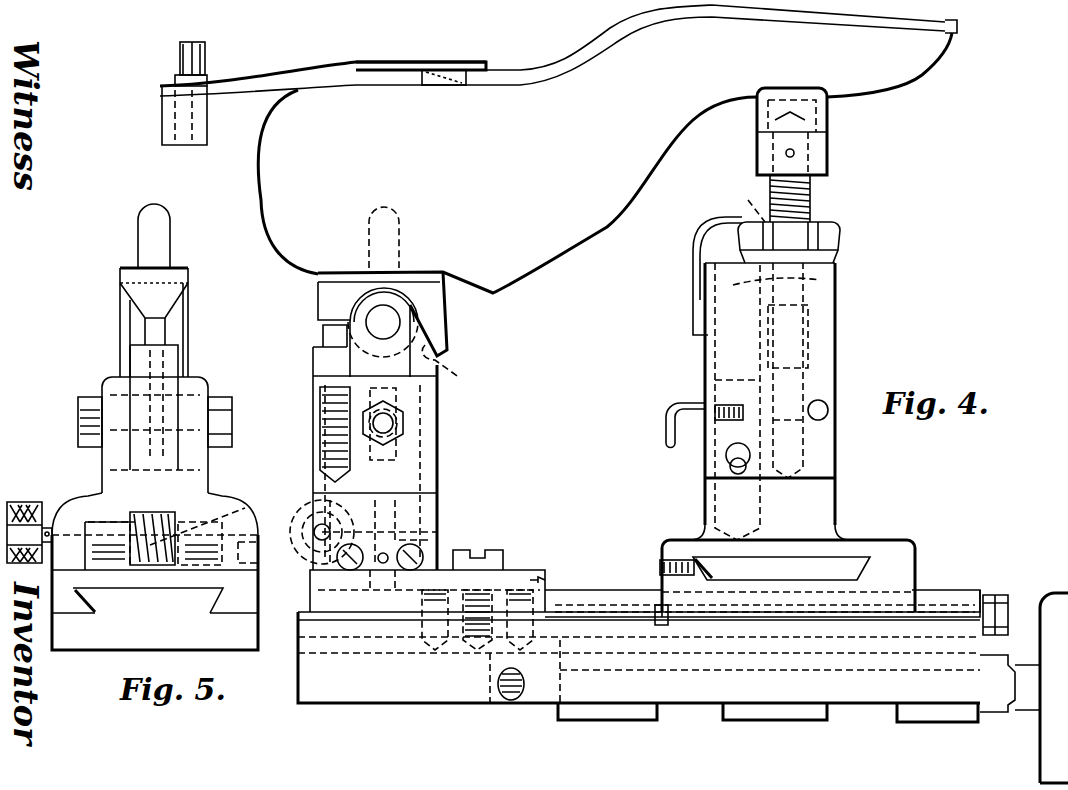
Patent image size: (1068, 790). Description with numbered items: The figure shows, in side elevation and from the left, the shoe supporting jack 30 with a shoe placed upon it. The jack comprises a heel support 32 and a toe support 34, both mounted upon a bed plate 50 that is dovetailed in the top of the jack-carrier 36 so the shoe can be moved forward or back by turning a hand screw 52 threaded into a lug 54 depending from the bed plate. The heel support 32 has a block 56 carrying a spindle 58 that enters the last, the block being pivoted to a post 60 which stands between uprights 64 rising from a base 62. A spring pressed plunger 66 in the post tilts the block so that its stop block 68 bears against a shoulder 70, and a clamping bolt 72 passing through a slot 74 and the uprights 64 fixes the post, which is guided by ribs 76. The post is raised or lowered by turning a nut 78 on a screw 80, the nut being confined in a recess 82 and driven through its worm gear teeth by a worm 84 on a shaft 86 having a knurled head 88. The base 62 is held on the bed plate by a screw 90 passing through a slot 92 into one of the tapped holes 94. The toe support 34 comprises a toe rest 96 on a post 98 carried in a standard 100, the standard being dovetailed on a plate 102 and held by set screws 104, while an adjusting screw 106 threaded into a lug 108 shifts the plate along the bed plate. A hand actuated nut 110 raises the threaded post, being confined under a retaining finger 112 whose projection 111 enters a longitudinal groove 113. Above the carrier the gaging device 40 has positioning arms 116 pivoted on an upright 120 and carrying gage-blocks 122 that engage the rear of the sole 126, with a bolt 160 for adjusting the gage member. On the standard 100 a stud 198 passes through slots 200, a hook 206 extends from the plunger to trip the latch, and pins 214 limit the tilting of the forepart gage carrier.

In FIG. 4, the shoe supporting jack 30 is at (652, 512).
In FIG. 4, the heel support 32 is at (320, 462).
In FIG. 5, the heel support 32 is at (97, 297).
In FIG. 4, the toe support 34 is at (847, 354).
In FIG. 4, the jack-carrier 36 is at (376, 690).
In FIG. 4, the gaging device 40 is at (320, 70).
In FIG. 4, the bed plate 50 is at (606, 600).
In FIG. 4, the hand screw 52 is at (1040, 745).
In FIG. 4, the lug 54 is at (588, 712).
In FIG. 4, the block 56 is at (332, 298).
In FIG. 4, the spindle 58 is at (399, 220).
In FIG. 5, the spindle 58 is at (148, 218).
In FIG. 4, the post 60 is at (440, 388).
In FIG. 4, the base 62 is at (440, 500).
In FIG. 4, the uprights 64 is at (470, 405).
In FIG. 5, the uprights 64 is at (112, 398).
In FIG. 4, the spring pressed plunger 66 is at (328, 337).
In FIG. 5, the spring pressed plunger 66 is at (150, 330).
In FIG. 4, the stop block 68 is at (440, 330).
In FIG. 4, the shoulder 70 is at (460, 365).
In FIG. 4, the clamping bolt 72 is at (395, 423).
In FIG. 5, the clamping bolt 72 is at (233, 420).
In FIG. 4, the slot 74 is at (400, 455).
In FIG. 5, the slot 74 is at (150, 395).
In FIG. 4, the ribs 76 is at (335, 434).
In FIG. 5, the ribs 76 is at (124, 360).
In FIG. 4, the nut 78 is at (428, 530).
In FIG. 5, the nut 78 is at (180, 535).
In FIG. 4, the screw 80 is at (330, 500).
In FIG. 5, the screw 80 is at (200, 498).
In FIG. 4, the recess 82 is at (305, 522).
In FIG. 4, the worm 84 is at (310, 548).
In FIG. 5, the worm 84 is at (152, 565).
In FIG. 4, the shaft 86 is at (312, 538).
In FIG. 5, the shaft 86 is at (68, 505).
In FIG. 4, the knurled head 88 is at (310, 572).
In FIG. 5, the knurled head 88 is at (25, 505).
In FIG. 4, the screw 90 is at (488, 560).
In FIG. 4, the slot 92 is at (545, 590).
In FIG. 4, the tapped holes 94 is at (520, 650).
In FIG. 4, the toe rest 96 is at (830, 122).
In FIG. 4, the post 98 is at (812, 205).
In FIG. 4, the standard 100 is at (826, 452).
In FIG. 4, the plate 102 is at (788, 568).
In FIG. 4, the set screws 104 is at (660, 568).
In FIG. 4, the adjusting screw 106 is at (998, 600).
In FIG. 4, the lug 108 is at (810, 603).
In FIG. 4, the hand actuated nut 110 is at (838, 238).
In FIG. 4, the projection 111 is at (758, 214).
In FIG. 4, the retaining finger 112 is at (712, 232).
In FIG. 4, the longitudinal groove 113 is at (820, 280).
In FIG. 4, the positioning arms 116 is at (400, 62).
In FIG. 4, the upright 120 is at (165, 128).
In FIG. 4, the gage-blocks 122 is at (438, 86).
In FIG. 4, the sole 126 is at (822, 14).
In FIG. 4, the bolt 160 is at (186, 68).
In FIG. 4, the stud 198 is at (726, 458).
In FIG. 4, the slots 200 is at (745, 470).
In FIG. 4, the hook 206 is at (666, 430).
In FIG. 4, the pins 214 is at (826, 405).